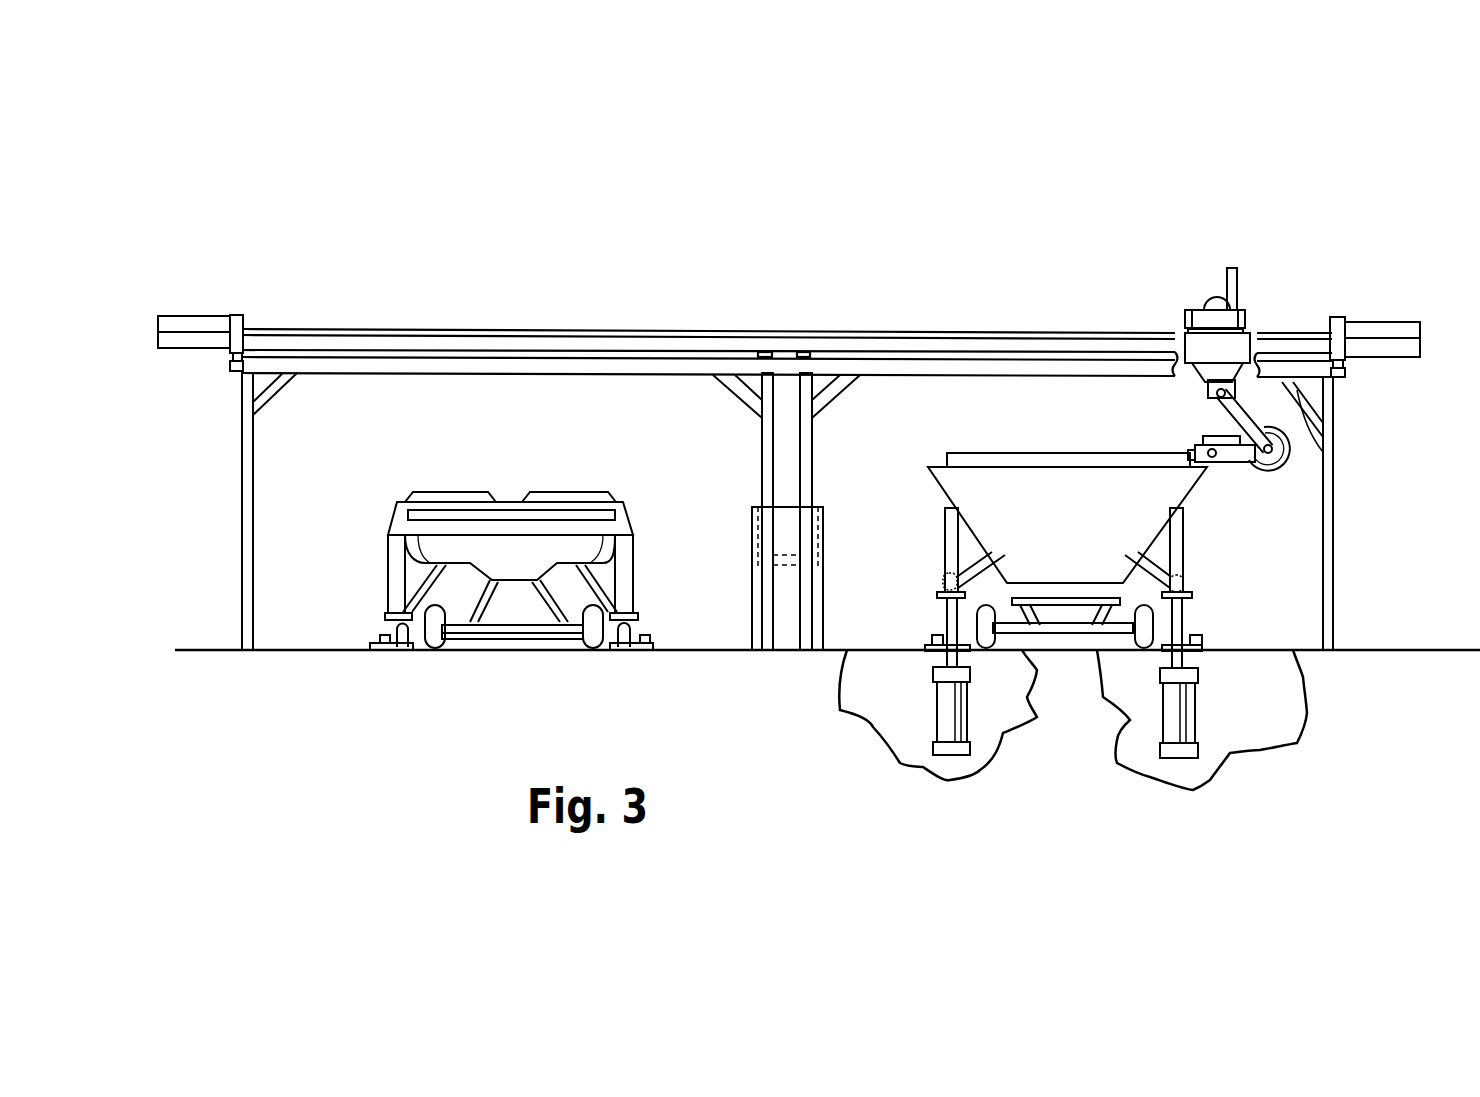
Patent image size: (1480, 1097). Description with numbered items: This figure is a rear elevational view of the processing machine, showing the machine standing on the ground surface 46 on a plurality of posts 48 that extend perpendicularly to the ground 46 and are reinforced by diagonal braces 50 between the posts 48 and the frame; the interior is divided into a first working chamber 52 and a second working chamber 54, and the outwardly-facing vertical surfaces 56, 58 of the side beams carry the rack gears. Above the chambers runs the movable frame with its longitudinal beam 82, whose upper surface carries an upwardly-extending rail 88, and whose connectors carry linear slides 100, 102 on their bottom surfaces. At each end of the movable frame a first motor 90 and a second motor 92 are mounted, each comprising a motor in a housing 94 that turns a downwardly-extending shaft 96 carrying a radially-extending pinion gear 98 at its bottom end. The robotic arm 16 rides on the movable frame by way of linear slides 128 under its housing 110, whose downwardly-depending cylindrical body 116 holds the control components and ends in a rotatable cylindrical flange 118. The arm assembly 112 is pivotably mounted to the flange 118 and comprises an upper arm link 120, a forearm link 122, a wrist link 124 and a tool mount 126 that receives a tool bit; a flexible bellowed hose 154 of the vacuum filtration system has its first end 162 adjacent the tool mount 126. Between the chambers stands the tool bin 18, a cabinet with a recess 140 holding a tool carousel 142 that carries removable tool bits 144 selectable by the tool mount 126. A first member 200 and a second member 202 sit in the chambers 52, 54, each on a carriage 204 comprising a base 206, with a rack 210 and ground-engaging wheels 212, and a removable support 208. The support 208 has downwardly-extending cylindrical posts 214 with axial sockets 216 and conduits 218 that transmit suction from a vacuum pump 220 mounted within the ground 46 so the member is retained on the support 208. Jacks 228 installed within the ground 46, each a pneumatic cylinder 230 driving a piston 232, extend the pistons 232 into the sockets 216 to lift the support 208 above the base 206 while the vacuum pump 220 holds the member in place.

The robotic arm 16 is at (1204, 379).
The tool bin 18 is at (827, 665).
The ground surface 46 is at (186, 646).
The posts 48 is at (255, 475).
The diagonal braces 50 is at (283, 392).
The first working chamber 52 is at (514, 416).
The second working chamber 54 is at (1035, 407).
The vertical surface 56 is at (236, 373).
The vertical surface 58 is at (1338, 378).
The second longitudinal beam 82 is at (694, 329).
The rail 88 is at (628, 329).
The first motor 90 is at (156, 346).
The second motor 92 is at (1424, 350).
The housing 94 is at (203, 316).
The shaft 96 is at (232, 357).
The pinion gear 98 is at (231, 366).
The linear slide 100 is at (247, 352).
The linear slide 102 is at (1338, 332).
The housing 110 is at (1249, 360).
The arm assembly 112 is at (1265, 448).
The cylindrical body 116 is at (1232, 352).
The cylindrical flange 118 is at (1262, 360).
The upper arm link 120 is at (1292, 455).
The forearm link 122 is at (1233, 462).
The wrist link 124 is at (1205, 440).
The tool mount 126 is at (1195, 453).
The linear slide 128 is at (1188, 320).
The recess 140 is at (753, 507).
The tool carousel 142 is at (788, 478).
The tool bits 144 is at (790, 505).
The hose 154 is at (1237, 284).
The first end 162 is at (1220, 438).
The first member 200 is at (386, 518).
The second member 202 is at (926, 479).
The carriage 204 is at (384, 572).
The base 206 is at (514, 641).
The support 208 is at (388, 546).
The rack 210 is at (546, 590).
The ground-engaging wheels 212 is at (437, 648).
The cylindrical posts 214 is at (388, 601).
The axial socket 216 is at (943, 580).
The conduits 218 is at (412, 578).
The vacuum pump 220 is at (393, 650).
The jacks 228 is at (932, 702).
The pneumatic cylinder 230 is at (965, 726).
The piston 232 is at (403, 650).